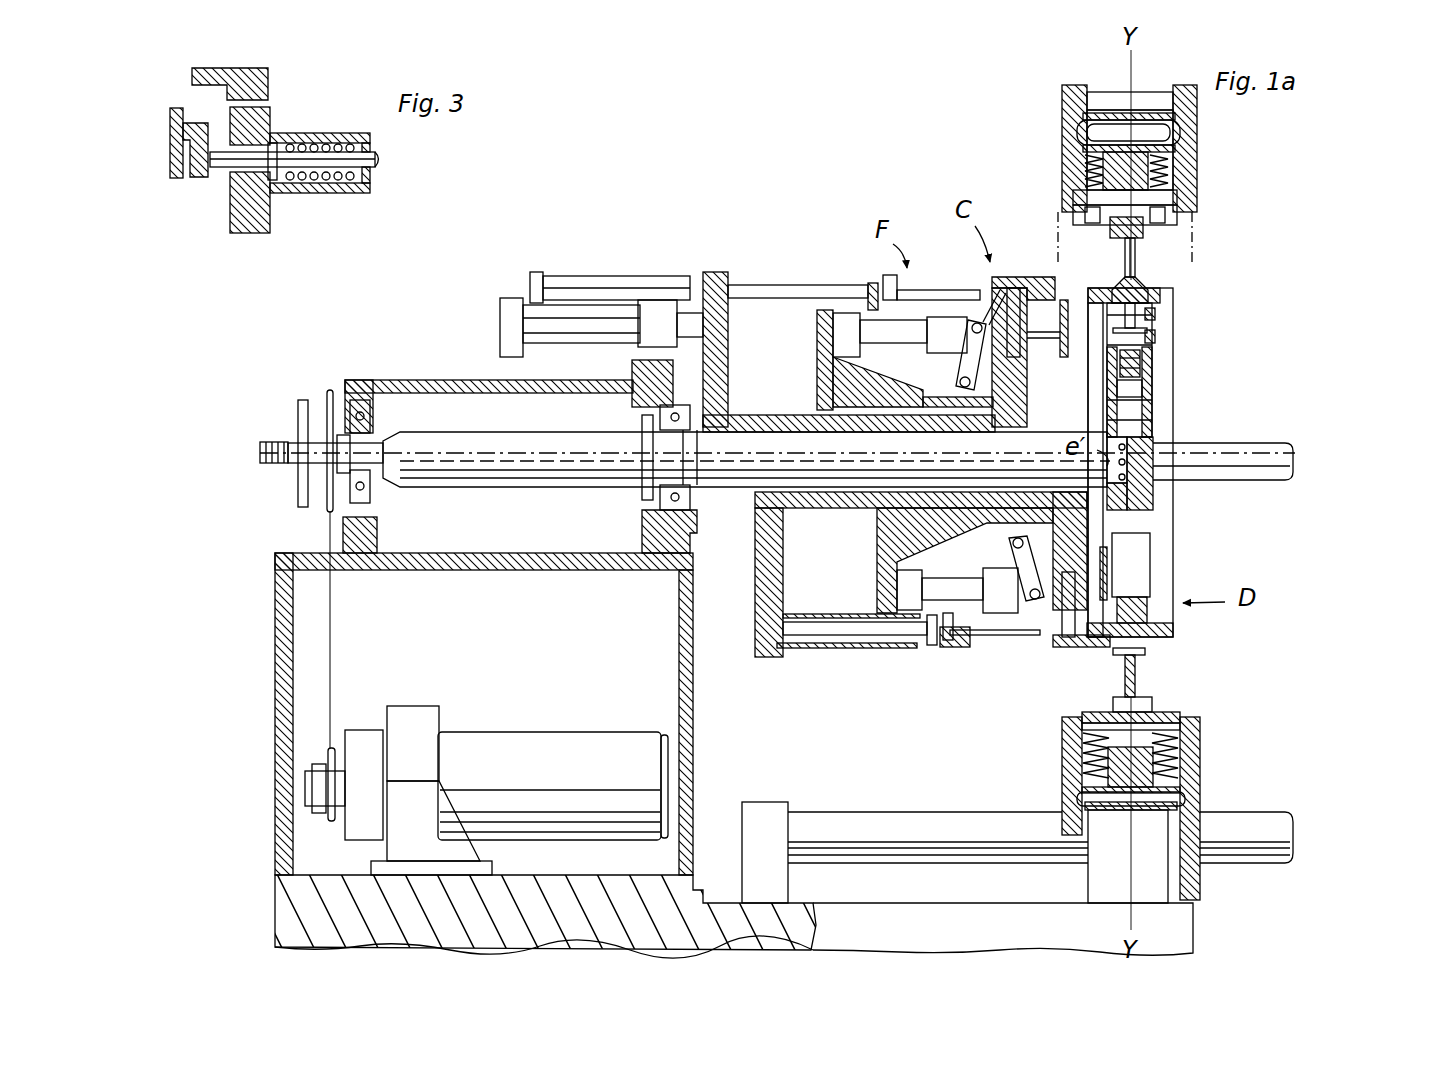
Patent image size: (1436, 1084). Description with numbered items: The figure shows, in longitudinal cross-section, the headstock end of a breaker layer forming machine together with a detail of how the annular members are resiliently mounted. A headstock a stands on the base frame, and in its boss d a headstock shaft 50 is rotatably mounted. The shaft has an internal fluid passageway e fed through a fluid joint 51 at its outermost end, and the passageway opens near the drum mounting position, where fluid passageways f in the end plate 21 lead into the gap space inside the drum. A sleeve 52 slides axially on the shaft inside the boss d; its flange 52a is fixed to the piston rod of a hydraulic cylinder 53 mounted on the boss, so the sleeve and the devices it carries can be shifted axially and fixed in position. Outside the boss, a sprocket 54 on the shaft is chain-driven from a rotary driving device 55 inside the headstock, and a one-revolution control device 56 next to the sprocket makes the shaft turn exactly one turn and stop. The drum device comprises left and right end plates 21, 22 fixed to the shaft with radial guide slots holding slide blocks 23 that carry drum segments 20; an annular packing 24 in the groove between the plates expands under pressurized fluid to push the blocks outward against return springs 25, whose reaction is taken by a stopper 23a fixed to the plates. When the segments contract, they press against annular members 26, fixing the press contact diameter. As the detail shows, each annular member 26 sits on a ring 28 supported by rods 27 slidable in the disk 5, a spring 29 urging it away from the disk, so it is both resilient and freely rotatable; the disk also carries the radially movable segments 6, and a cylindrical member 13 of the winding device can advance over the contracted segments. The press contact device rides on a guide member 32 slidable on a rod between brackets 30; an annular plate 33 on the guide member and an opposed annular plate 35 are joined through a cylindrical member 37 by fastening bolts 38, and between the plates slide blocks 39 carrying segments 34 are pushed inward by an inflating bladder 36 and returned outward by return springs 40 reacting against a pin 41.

In FIG. 3, the disk 5 is at (270, 122).
In FIG. 1a, the disk 5 is at (1030, 368).
In FIG. 3, the segments 6 is at (420, 147).
In FIG. 1a, the segments 6 is at (1030, 280).
In FIG. 1a, the cylindrical member 13 is at (924, 287).
In FIG. 1a, the drum segments 20 is at (1160, 298).
In FIG. 1a, the end plate 21 is at (1107, 385).
In FIG. 1a, the end plate 22 is at (1153, 395).
In FIG. 1a, the slide blocks 23 is at (1156, 328).
In FIG. 1a, the stopper 23a is at (1157, 350).
In FIG. 1a, the annular packing 24 is at (1142, 387).
In FIG. 1a, the return springs 25 is at (1140, 364).
In FIG. 1a, the annular member 26 is at (1066, 298).
In FIG. 3, the rods 27 is at (384, 163).
In FIG. 3, the ring 28 is at (203, 178).
In FIG. 3, the spring 29 is at (308, 133).
In FIG. 1a, the brackets 30 is at (768, 802).
In FIG. 1a, the guide member 32 is at (1110, 878).
In FIG. 1a, the annular plate 33 is at (1182, 148).
In FIG. 1a, the segments 34 is at (1142, 276).
In FIG. 1a, the annular plate 35 is at (1062, 108).
In FIG. 1a, the bladder 36 is at (1180, 118).
In FIG. 1a, the cylindrical member 37 is at (1112, 90).
In FIG. 1a, the fastening bolts 38 is at (1148, 95).
In FIG. 1a, the slide blocks 39 is at (1145, 236).
In FIG. 1a, the return springs 40 is at (1150, 170).
In FIG. 1a, the pin 41 is at (1075, 216).
In FIG. 1a, the headstock shaft 50 is at (612, 477).
In FIG. 1a, the fluid joint 51 is at (260, 453).
In FIG. 1a, the sleeve 52 is at (746, 417).
In FIG. 1a, the flange 52a is at (718, 277).
In FIG. 1a, the hydraulic cylinder 53 is at (500, 312).
In FIG. 1a, the sprocket 54 is at (331, 390).
In FIG. 1a, the rotary driving device 55 is at (502, 735).
In FIG. 1a, the one-revolution control device 56 is at (298, 408).
In FIG. 1a, the headstock a is at (275, 690).
In FIG. 1a, the boss d is at (368, 385).
In FIG. 1a, the fluid passageway e is at (428, 452).
In FIG. 1a, the fluid passageways f is at (1153, 498).